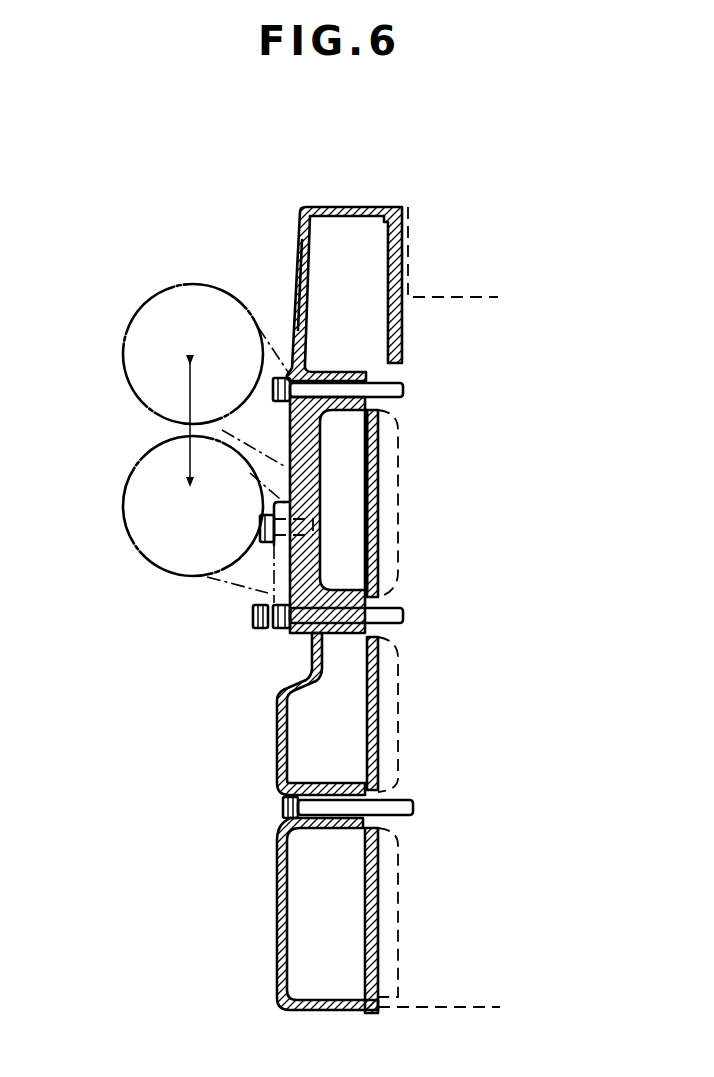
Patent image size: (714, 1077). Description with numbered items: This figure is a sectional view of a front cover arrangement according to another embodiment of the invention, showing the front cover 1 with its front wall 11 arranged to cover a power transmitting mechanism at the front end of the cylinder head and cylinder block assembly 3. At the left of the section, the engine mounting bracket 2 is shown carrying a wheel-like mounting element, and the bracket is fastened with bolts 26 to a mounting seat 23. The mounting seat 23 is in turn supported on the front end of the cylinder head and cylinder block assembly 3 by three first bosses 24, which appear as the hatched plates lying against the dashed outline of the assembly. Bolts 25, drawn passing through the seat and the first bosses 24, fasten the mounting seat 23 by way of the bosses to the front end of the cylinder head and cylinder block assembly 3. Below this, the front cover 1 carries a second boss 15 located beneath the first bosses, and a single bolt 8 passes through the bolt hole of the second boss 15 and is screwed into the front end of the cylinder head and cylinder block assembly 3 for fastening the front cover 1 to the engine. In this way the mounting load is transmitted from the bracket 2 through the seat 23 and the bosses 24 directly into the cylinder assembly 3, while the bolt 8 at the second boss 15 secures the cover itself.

The front cover 1 is at (300, 222).
The front wall 11 is at (300, 290).
The engine mounting bracket 2 is at (133, 467).
The mounting seat 23 is at (322, 490).
The first bosses 24 is at (362, 372).
The bolts 25 is at (405, 390).
The bolts 26 is at (233, 583).
The cylinder head and cylinder block assembly 3 is at (397, 692).
The bolt 8 is at (283, 806).
The second boss 15 is at (330, 828).